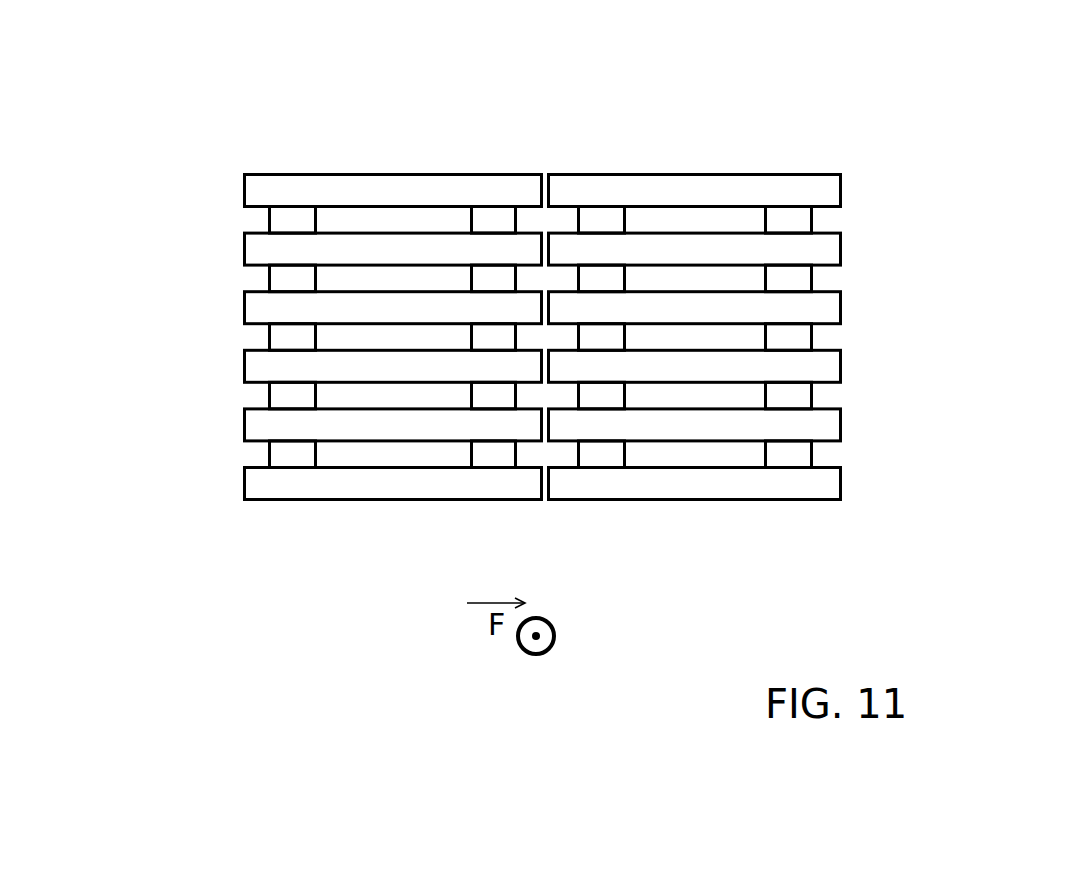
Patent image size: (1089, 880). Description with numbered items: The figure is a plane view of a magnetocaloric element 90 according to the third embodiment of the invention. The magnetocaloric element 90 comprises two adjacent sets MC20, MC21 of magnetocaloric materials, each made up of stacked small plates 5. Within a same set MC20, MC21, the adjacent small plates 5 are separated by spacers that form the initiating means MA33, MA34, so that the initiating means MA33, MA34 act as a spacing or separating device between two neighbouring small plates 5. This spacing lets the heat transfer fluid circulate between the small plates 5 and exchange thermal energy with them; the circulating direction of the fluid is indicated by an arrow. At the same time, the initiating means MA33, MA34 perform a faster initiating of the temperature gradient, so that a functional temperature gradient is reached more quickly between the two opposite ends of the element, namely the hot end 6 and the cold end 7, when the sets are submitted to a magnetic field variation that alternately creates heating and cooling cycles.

The magnetocaloric element 90 is at (965, 127).
The small plates 5 is at (362, 363).
The set of magnetocaloric materials MC20 is at (385, 103).
The set of magnetocaloric materials MC21 is at (678, 108).
The initiating means MA33 is at (497, 335).
The initiating means MA34 is at (603, 340).
The cold end 7 is at (210, 302).
The hot end 6 is at (862, 313).